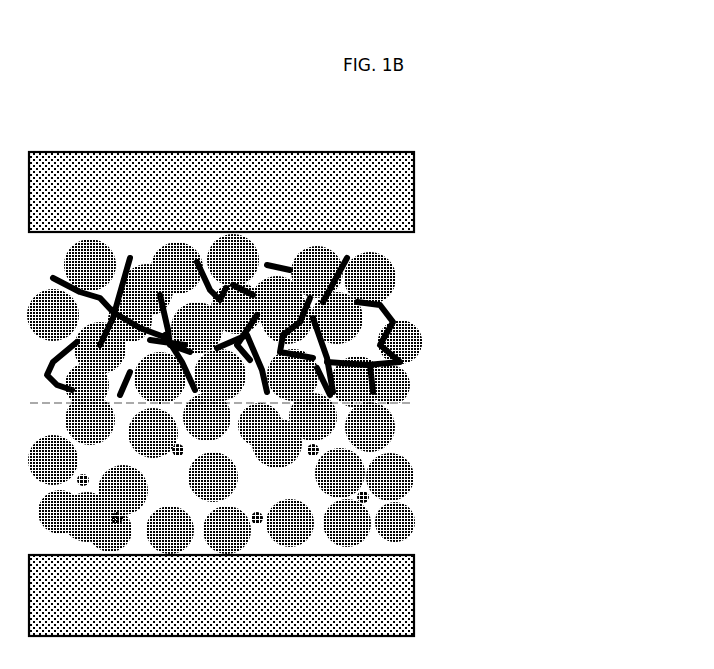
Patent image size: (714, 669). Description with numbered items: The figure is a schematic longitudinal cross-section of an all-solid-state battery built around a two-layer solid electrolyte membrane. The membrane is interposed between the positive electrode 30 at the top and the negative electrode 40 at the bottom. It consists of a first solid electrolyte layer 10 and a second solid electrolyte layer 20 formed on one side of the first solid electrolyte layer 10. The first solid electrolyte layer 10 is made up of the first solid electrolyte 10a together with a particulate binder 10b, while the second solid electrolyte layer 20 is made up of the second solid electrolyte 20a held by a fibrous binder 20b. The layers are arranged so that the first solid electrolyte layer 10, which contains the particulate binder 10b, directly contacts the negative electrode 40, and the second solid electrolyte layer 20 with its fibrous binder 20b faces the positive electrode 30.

The first solid electrolyte layer 10 is at (602, 410).
The first solid electrolyte 10a is at (390, 498).
The particulate binder 10b is at (398, 435).
The second solid electrolyte layer 20 is at (602, 297).
The second solid electrolyte 20a is at (405, 316).
The fibrous binder 20b is at (420, 348).
The positive electrode 30 is at (424, 190).
The negative electrode 40 is at (424, 598).